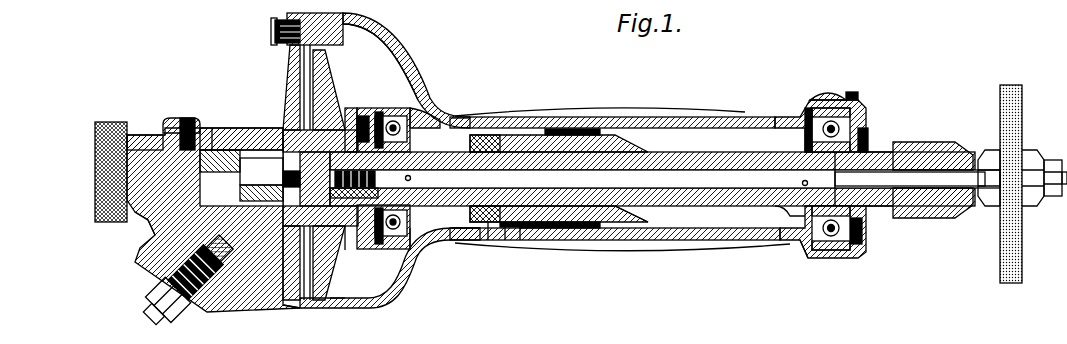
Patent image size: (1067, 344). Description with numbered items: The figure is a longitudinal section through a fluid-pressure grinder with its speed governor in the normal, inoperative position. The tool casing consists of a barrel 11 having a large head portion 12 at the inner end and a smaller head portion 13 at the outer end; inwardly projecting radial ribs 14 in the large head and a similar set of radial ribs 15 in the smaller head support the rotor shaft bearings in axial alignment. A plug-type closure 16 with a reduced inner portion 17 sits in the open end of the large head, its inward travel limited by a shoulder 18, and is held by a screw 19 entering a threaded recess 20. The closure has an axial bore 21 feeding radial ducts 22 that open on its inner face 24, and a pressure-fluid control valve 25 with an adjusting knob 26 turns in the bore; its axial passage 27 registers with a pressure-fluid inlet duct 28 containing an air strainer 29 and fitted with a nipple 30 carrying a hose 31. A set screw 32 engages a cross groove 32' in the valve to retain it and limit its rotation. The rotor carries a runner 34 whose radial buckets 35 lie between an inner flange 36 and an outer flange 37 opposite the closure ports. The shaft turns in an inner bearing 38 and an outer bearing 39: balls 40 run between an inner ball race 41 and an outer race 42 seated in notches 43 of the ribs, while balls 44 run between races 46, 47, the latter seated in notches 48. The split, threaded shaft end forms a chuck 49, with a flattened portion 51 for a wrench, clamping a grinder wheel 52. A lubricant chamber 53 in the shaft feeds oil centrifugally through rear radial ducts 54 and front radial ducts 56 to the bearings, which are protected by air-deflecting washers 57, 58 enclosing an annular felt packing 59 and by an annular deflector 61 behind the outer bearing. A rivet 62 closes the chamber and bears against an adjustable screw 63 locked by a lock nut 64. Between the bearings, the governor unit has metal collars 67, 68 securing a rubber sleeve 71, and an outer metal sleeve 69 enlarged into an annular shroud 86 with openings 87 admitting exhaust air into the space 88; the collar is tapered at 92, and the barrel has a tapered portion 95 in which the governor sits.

The barrel 11 is at (705, 246).
The large head portion 12 is at (416, 268).
The smaller head portion 13 is at (816, 262).
The radial ribs 14 is at (440, 243).
The radial ribs 15 is at (782, 247).
The plug-type closure 16 is at (290, 68).
The reduced inner portion 17 is at (336, 306).
The shoulder 18 is at (283, 306).
The screw 19 is at (275, 22).
The threaded recess 20 is at (343, 20).
The axial bore 21 is at (147, 212).
The radial ducts 22 is at (286, 113).
The inner face 24 is at (330, 78).
The pressure-fluid control valve 25 is at (212, 128).
The adjusting knob 26 is at (96, 200).
The axial passage 27 is at (261, 171).
The pressure-fluid inlet duct 28 is at (228, 224).
The air strainer 29 is at (178, 256).
The nipple 30 is at (155, 296).
The hose 31 is at (151, 321).
The set screw 32 is at (181, 121).
The cross groove 32' is at (142, 123).
The runner 34 is at (348, 250).
The radial buckets 35 is at (340, 96).
The inner flange 36 is at (350, 110).
The outer flange 37 is at (360, 42).
The inner anti-friction bearing 38 is at (455, 116).
The outer anti-friction bearing 39 is at (860, 118).
The balls 40 is at (412, 132).
The inner ball race 41 is at (412, 212).
The outer race 42 is at (398, 112).
The notches 43 is at (418, 96).
The balls 44 is at (804, 130).
The race 46 is at (866, 140).
The race 47 is at (852, 92).
The notches 48 is at (822, 96).
The chuck 49 is at (936, 219).
The flattened portion 51 is at (884, 208).
The grinder wheel 52 is at (1000, 264).
The lubricant-containing chamber 53 is at (703, 196).
The rear radial ducts 54 is at (420, 178).
The front radial ducts 56 is at (802, 183).
The air deflecting washer 57 is at (388, 249).
The air deflecting washer 58 is at (802, 256).
The annular felt packing 59 is at (372, 118).
The annular deflector 61 is at (778, 212).
The rivet 62 is at (376, 178).
The adjustable screw 63 is at (292, 186).
The lock nut 64 is at (354, 190).
The metal collar 67 is at (492, 242).
The metal collar 68 is at (596, 205).
The outer metal sleeve 69 is at (510, 242).
The rubber sleeve 71 is at (524, 242).
The annular shroud 86 is at (560, 230).
The openings 87 is at (540, 240).
The space 88 is at (568, 129).
The tapered forward end 92 is at (638, 218).
The tapered portion 95 is at (490, 112).